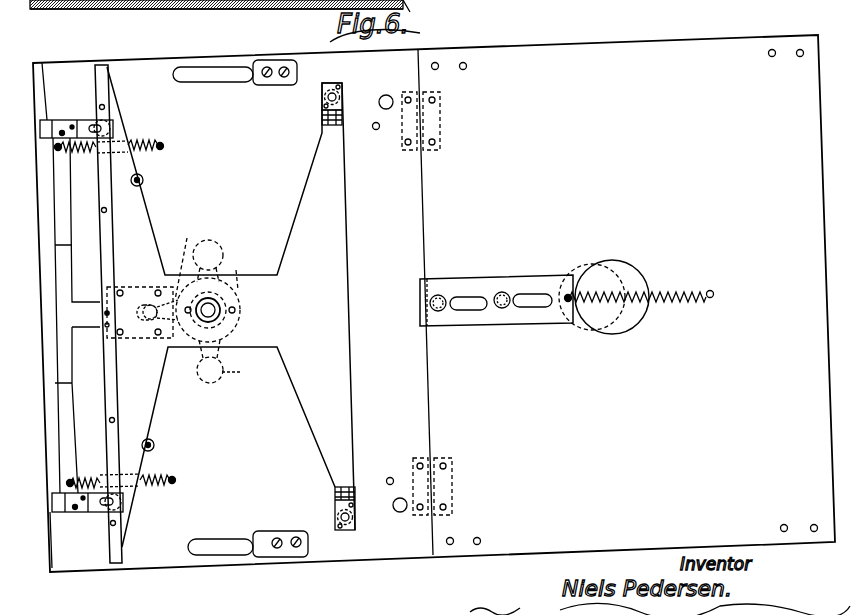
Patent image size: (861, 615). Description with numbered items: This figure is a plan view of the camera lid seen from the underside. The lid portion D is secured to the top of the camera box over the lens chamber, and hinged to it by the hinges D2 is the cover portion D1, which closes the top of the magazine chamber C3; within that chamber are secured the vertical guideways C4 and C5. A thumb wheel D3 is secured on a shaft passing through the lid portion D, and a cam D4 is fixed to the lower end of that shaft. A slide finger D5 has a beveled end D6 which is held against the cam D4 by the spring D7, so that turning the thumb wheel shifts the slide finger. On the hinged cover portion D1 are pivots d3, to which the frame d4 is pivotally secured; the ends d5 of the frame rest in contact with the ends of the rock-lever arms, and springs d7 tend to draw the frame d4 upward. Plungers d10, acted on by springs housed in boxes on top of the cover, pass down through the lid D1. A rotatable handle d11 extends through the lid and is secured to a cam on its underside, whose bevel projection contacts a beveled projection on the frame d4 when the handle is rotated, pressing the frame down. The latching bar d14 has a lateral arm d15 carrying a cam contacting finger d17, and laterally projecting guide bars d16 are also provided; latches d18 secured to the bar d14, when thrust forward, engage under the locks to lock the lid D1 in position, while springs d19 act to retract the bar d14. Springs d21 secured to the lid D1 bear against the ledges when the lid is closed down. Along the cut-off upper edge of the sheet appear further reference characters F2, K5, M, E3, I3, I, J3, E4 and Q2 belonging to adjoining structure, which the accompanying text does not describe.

The lid portion D is at (434, 303).
The cover portion D1 is at (231, 307).
The hinges D2 is at (441, 115).
The thumb wheel D3 is at (574, 268).
The cam D4 is at (641, 272).
The slide finger D5 is at (487, 278).
The beveled end D6 is at (420, 303).
The spring D7 is at (673, 303).
The pivots d3 is at (352, 114).
The frame d4 is at (292, 318).
The ends of the frame d5 is at (96, 77).
The springs d7 is at (161, 174).
The plungers d10 is at (387, 95).
The rotatable handle d11 is at (262, 388).
The latching bar d14 is at (68, 293).
The lateral arm d15 is at (88, 318).
The laterally projecting guide bars d16 is at (80, 120).
The cam contacting finger d17 is at (200, 245).
The latches d18 is at (37, 67).
The springs d19 is at (134, 143).
The springs d21 is at (233, 82).
The vertical guideways C5 is at (52, 10).
The part F2 is at (91, 10).
The part K5 is at (124, 10).
The magazine chamber C3 is at (150, 10).
The part M is at (185, 10).
The part E3 is at (210, 10).
The part I3 is at (245, 10).
The part I is at (275, 10).
The part J3 is at (303, 9).
The part E4 is at (322, 22).
The vertical guideways C4 is at (433, 0).
The part Q2 is at (484, 0).